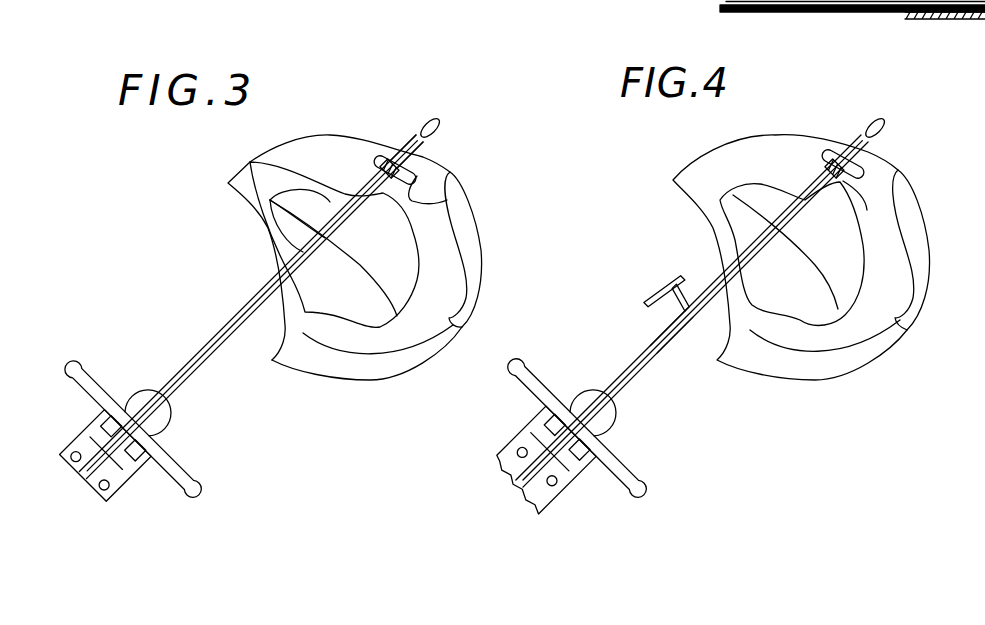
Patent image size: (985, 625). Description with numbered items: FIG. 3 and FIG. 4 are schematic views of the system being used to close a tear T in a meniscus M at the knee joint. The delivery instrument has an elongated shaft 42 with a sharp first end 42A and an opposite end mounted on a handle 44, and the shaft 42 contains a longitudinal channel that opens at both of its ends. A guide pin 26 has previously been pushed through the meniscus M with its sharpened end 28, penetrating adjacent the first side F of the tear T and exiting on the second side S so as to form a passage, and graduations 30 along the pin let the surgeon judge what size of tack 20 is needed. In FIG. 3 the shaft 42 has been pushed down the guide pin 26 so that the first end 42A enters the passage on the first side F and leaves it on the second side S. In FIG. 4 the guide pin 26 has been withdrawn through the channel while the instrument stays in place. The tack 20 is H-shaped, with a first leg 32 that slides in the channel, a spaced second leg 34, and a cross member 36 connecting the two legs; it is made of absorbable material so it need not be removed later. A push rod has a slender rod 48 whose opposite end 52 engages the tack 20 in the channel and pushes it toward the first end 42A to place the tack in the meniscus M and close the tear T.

In FIG. 4, the tack 20 is at (641, 264).
In FIG. 3, the guide pin 26 is at (232, 322).
In FIG. 3, the sharpened end 28 is at (438, 131).
In FIG. 3, the graduations 30 is at (250, 162).
In FIG. 4, the first leg 32 is at (686, 320).
In FIG. 4, the second leg 34 is at (656, 296).
In FIG. 4, the cross member 36 is at (686, 287).
In FIG. 3, the elongated shaft 42 is at (248, 296).
In FIG. 4, the elongated shaft 42 is at (627, 362).
In FIG. 3, the sharp first end 42A is at (430, 128).
In FIG. 4, the sharp first end 42A is at (869, 128).
In FIG. 4, the handle 44 is at (501, 448).
In FIG. 4, the slender rod 48 is at (662, 348).
In FIG. 4, the opposite end 52 is at (984, 40).
In FIG. 3, the meniscus M is at (345, 134).
In FIG. 4, the meniscus M is at (782, 133).
In FIG. 3, the second side S is at (402, 152).
In FIG. 4, the second side S is at (850, 155).
In FIG. 3, the tear T is at (378, 155).
In FIG. 4, the tear T is at (878, 165).
In FIG. 3, the first side F is at (456, 203).